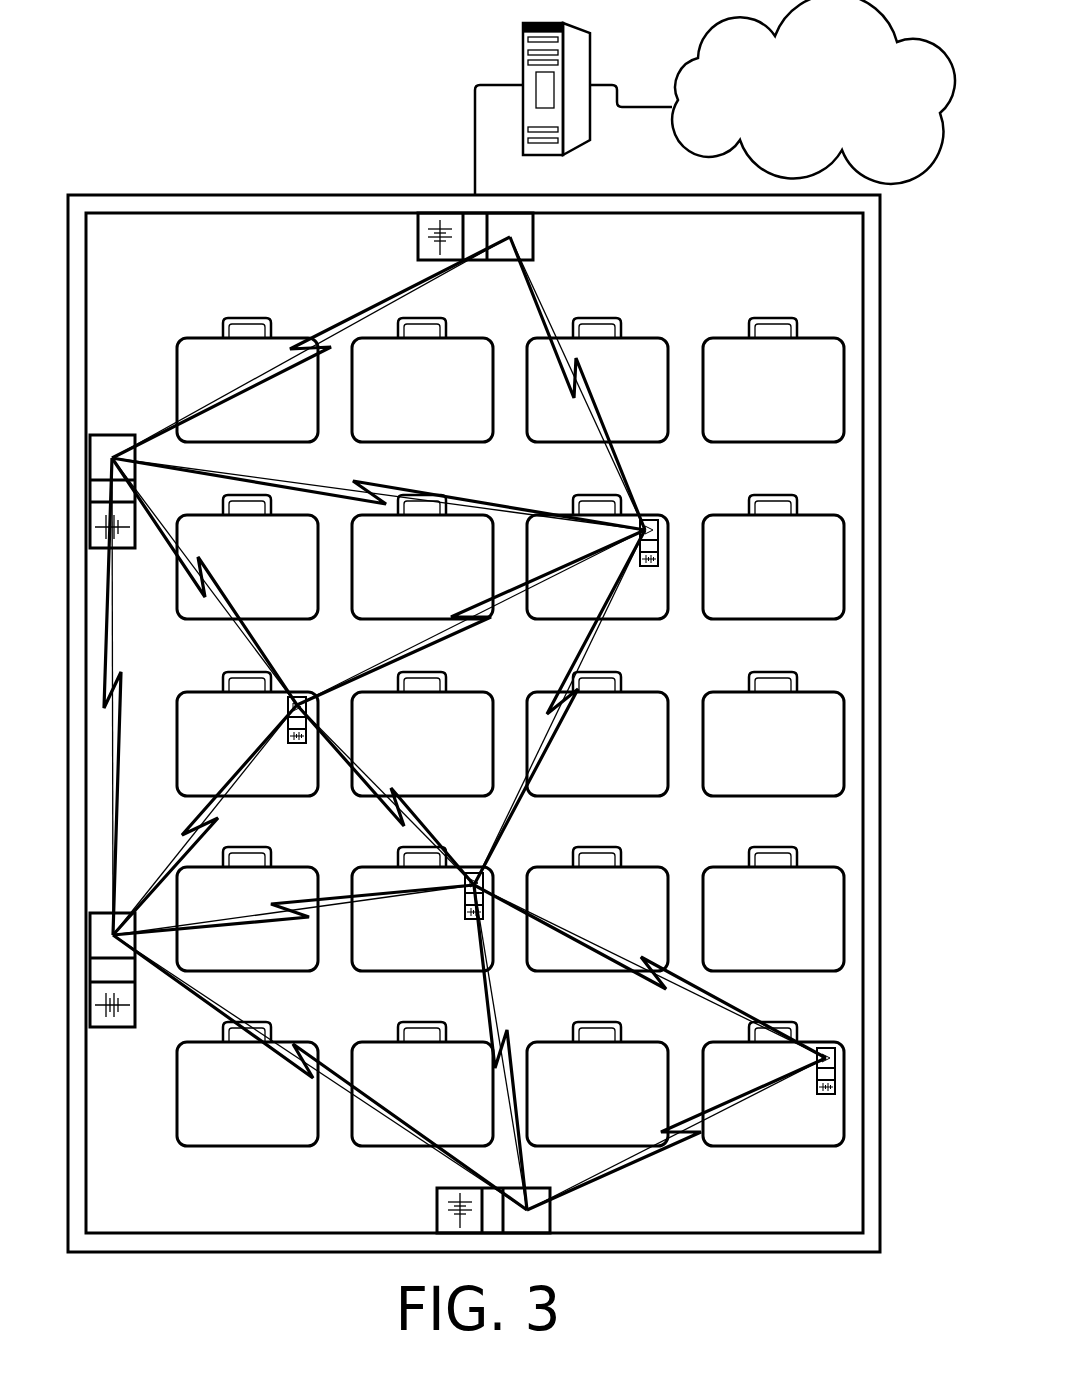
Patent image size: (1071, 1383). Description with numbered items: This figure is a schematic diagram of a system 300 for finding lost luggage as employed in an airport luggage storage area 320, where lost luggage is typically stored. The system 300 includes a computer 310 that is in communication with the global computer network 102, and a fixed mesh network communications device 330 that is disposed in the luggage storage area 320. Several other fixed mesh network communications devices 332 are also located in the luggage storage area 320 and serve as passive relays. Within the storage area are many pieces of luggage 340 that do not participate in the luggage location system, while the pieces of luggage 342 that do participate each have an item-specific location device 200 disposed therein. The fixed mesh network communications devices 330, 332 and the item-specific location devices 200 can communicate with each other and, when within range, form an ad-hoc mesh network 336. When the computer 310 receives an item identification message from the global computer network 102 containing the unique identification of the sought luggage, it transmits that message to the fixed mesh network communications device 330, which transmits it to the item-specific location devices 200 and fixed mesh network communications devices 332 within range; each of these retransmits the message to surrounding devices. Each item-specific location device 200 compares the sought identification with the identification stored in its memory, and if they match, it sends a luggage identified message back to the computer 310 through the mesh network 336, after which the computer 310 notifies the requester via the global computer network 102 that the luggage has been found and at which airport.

The system 300 is at (383, 58).
The computer 310 is at (573, 29).
The global computer network 102 is at (733, 22).
The luggage storage area 320 is at (314, 192).
The fixed mesh network communications device 330 is at (533, 227).
The fixed mesh network communications devices 332 is at (102, 434).
The ad-hoc mesh network 336 is at (285, 302).
The pieces of luggage 340 is at (237, 415).
The pieces of luggage 342 is at (547, 608).
The item-specific location device 200 is at (640, 533).